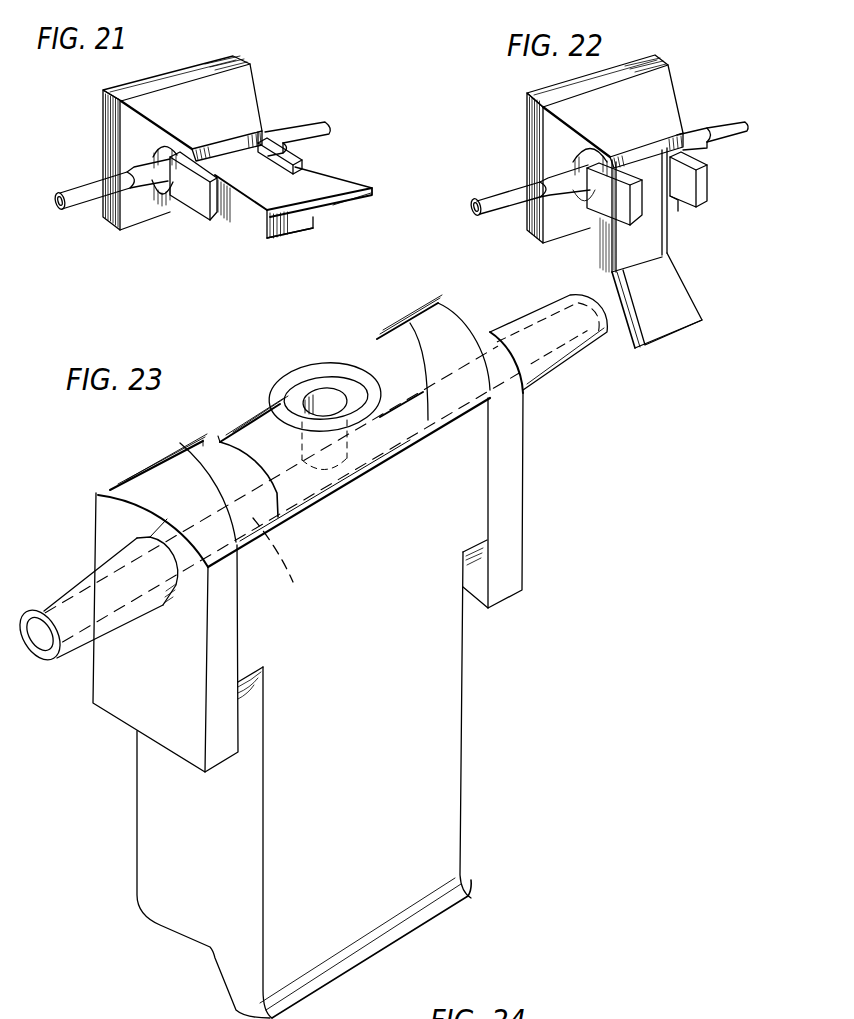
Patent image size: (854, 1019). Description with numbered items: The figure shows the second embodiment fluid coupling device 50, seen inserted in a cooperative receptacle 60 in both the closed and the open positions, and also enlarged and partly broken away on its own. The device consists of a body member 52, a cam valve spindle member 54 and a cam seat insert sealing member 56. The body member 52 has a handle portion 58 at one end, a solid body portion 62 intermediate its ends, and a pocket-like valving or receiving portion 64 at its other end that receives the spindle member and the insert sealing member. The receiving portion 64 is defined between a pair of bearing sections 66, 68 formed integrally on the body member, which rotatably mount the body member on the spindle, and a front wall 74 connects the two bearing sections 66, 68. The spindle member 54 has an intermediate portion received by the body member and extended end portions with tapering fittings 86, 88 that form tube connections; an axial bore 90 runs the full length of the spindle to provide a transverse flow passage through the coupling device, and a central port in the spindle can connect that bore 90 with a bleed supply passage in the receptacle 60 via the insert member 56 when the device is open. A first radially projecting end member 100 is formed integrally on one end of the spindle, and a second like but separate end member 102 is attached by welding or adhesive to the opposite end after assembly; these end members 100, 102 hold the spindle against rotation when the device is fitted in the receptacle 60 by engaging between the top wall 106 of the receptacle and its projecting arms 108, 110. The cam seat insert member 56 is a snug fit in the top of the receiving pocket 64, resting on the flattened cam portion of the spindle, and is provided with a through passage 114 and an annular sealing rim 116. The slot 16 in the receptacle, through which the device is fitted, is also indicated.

In FIG. 22, the housing slot 16 is at (594, 215).
In FIG. 21, the fluid coupling device 50 is at (280, 225).
In FIG. 22, the fluid coupling device 50 is at (632, 279).
In FIG. 23, the fluid coupling device 50 is at (324, 656).
In FIG. 21, the body member 52 is at (292, 236).
In FIG. 22, the body member 52 is at (687, 331).
In FIG. 23, the body member 52 is at (464, 831).
In FIG. 21, the cam valve spindle member 54 is at (281, 126).
In FIG. 22, the cam valve spindle member 54 is at (700, 125).
In FIG. 23, the cam valve spindle member 54 is at (310, 503).
In FIG. 23, the cam seat insert sealing member 56 is at (256, 430).
In FIG. 21, the handle portion 58 is at (352, 200).
In FIG. 22, the handle portion 58 is at (654, 332).
In FIG. 23, the handle portion 58 is at (369, 944).
In FIG. 21, the receptacle 60 is at (173, 64).
In FIG. 22, the receptacle 60 is at (519, 119).
In FIG. 21, the solid body portion 62 is at (287, 192).
In FIG. 22, the solid body portion 62 is at (597, 252).
In FIG. 23, the solid body portion 62 is at (148, 850).
In FIG. 23, the receiving portion 64 is at (161, 488).
In FIG. 23, the bearing section 66 is at (207, 432).
In FIG. 23, the bearing section 68 is at (371, 406).
In FIG. 23, the front wall 74 is at (347, 494).
In FIG. 23, the tapering fitting 86 is at (80, 656).
In FIG. 23, the tapering fitting 88 is at (550, 378).
In FIG. 23, the axial bore 90 is at (286, 565).
In FIG. 21, the first radially projecting end member 100 is at (296, 161).
In FIG. 22, the first radially projecting end member 100 is at (705, 188).
In FIG. 23, the first radially projecting end member 100 is at (508, 528).
In FIG. 21, the second end member 102 is at (198, 208).
In FIG. 22, the second end member 102 is at (601, 193).
In FIG. 23, the second end member 102 is at (127, 709).
In FIG. 21, the top wall 106 is at (229, 148).
In FIG. 22, the projecting arm 108 is at (677, 206).
In FIG. 21, the projecting arm 110 is at (165, 212).
In FIG. 23, the through passage 114 is at (306, 400).
In FIG. 23, the annular sealing rim 116 is at (316, 399).